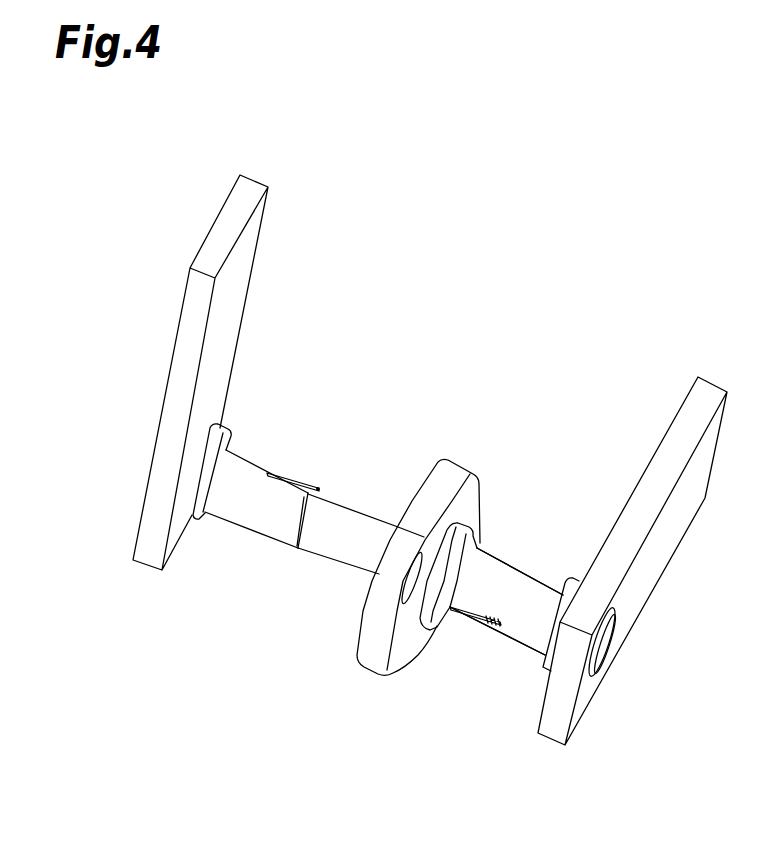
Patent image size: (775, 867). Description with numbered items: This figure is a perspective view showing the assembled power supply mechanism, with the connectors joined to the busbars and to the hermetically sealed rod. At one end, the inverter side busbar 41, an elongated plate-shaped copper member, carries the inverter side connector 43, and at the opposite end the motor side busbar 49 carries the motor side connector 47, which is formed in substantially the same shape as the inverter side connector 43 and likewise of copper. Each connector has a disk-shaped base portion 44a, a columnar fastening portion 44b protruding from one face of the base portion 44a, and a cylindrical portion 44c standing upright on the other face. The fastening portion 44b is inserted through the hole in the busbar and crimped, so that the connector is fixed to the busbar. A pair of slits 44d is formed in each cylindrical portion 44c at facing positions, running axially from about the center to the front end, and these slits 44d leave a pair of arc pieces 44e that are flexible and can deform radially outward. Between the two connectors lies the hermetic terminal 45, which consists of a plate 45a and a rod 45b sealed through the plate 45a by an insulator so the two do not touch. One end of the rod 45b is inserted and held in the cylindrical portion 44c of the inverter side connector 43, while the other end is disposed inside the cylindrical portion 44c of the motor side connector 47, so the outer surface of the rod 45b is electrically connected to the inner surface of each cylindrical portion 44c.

The inverter side busbar 41 is at (717, 377).
The inverter side connector 43 is at (520, 554).
The base portion 44a is at (193, 518).
The fastening portion 44b is at (612, 662).
The cylindrical portion 44c is at (263, 522).
The slit 44d is at (296, 475).
The arc piece 44e is at (322, 486).
The hermetic terminal 45 is at (462, 456).
The plate 45a is at (368, 666).
The rod 45b is at (333, 548).
The motor side connector 47 is at (255, 450).
The motor side busbar 49 is at (268, 258).